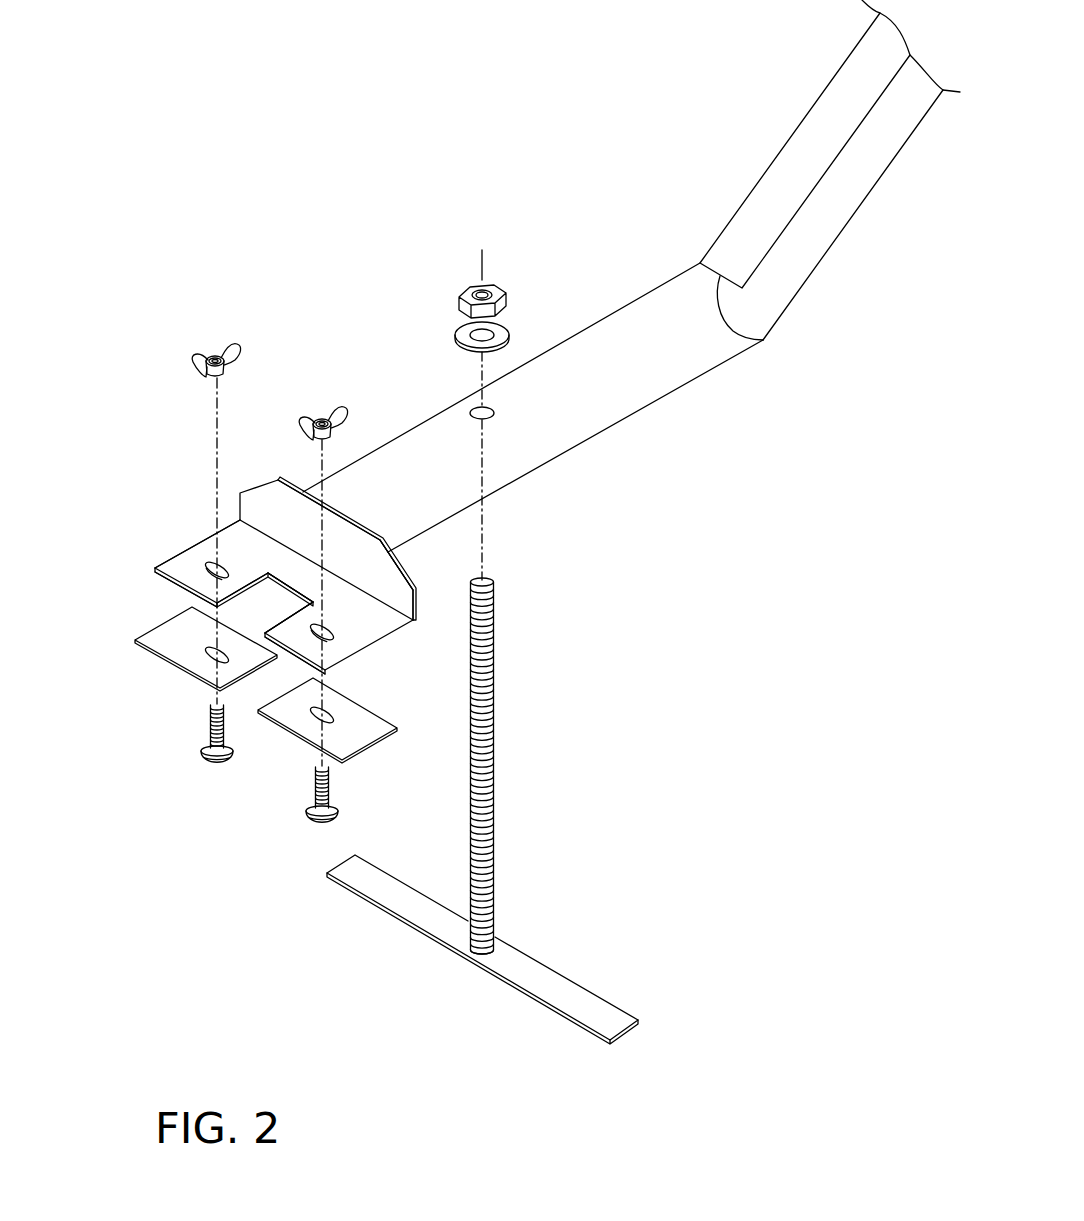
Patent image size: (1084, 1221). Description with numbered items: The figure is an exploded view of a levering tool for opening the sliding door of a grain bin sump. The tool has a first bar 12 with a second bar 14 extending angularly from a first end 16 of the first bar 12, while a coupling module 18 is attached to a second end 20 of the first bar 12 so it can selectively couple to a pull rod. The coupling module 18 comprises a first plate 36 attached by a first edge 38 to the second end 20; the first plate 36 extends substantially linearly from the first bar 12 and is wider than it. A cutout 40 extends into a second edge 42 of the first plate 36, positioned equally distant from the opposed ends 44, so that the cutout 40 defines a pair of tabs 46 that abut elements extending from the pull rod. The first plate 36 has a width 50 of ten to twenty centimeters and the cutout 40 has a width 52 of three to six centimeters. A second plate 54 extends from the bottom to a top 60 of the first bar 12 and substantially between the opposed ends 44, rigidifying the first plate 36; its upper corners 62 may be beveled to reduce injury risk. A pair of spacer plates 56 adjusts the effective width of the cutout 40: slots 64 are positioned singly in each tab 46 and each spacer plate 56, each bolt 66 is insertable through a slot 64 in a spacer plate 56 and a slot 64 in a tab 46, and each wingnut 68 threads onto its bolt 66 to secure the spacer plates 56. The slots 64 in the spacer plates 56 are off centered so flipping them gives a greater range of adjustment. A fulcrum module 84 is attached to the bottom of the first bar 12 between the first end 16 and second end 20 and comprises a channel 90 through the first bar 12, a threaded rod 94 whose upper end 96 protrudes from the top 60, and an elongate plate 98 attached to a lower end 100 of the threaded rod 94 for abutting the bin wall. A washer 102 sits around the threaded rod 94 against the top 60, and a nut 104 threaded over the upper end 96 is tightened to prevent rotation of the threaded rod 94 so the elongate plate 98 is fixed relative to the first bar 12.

The first bar 12 is at (576, 381).
The second bar 14 is at (805, 136).
The first end 16 is at (757, 340).
The coupling module 18 is at (317, 580).
The second end 20 is at (327, 560).
The first plate 36 is at (370, 622).
The first edge 38 is at (370, 557).
The cutout 40 is at (274, 606).
The second edge 42 is at (270, 663).
The opposed ends 44 is at (190, 550).
The tab 46 is at (195, 585).
The width 50 is at (204, 548).
The width 52 is at (297, 586).
The second plate 54 is at (383, 540).
The spacer plate 56 is at (152, 632).
The top 60 is at (634, 322).
The upper corners 62 is at (415, 562).
The slot 64 is at (205, 567).
The bolt 66 is at (203, 751).
The wingnut 68 is at (238, 348).
The fulcrum module 84 is at (513, 608).
The channel 90 is at (476, 410).
The threaded rod 94 is at (559, 759).
The upper end 96 is at (487, 583).
The elongate plate 98 is at (594, 1007).
The lower end 100 is at (500, 955).
The washer 102 is at (506, 330).
The nut 104 is at (495, 286).